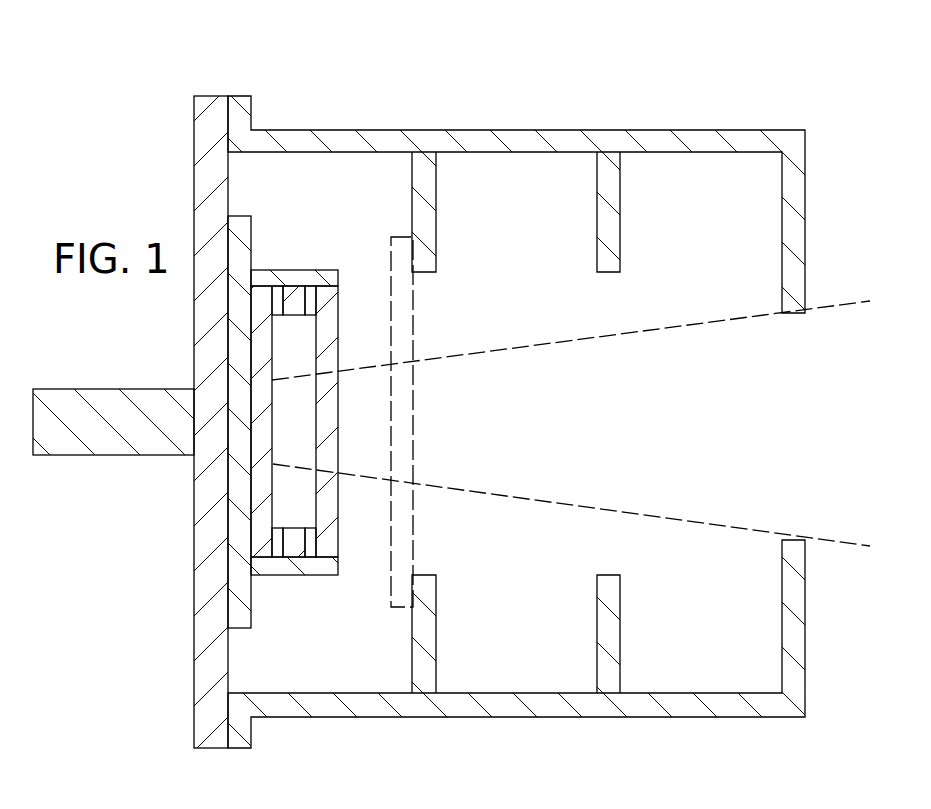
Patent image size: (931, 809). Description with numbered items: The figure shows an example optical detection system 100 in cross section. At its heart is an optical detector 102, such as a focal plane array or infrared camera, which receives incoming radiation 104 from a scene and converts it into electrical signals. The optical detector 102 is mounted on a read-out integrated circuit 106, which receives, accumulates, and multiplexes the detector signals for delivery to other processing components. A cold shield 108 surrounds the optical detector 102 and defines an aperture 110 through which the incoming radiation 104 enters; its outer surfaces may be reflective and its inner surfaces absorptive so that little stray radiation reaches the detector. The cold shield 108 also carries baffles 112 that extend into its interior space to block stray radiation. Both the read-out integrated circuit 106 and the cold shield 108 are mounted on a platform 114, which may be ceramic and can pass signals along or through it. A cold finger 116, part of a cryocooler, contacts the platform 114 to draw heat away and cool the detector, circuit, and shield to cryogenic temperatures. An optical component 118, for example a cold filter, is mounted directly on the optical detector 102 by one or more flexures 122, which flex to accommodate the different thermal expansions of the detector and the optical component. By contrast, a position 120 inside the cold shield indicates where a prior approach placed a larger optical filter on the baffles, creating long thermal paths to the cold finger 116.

The optical detection system 100 is at (294, 71).
The optical detector 102 is at (305, 423).
The incoming radiation 104 is at (718, 322).
The read-out integrated circuit 106 is at (240, 225).
The cold shield 108 is at (563, 708).
The aperture 110 is at (766, 550).
The baffles 112 is at (456, 634).
The platform 114 is at (204, 687).
The cold finger 116 is at (120, 447).
The optical component 118 is at (327, 313).
The position 120 is at (413, 421).
The flexures 122 is at (292, 568).